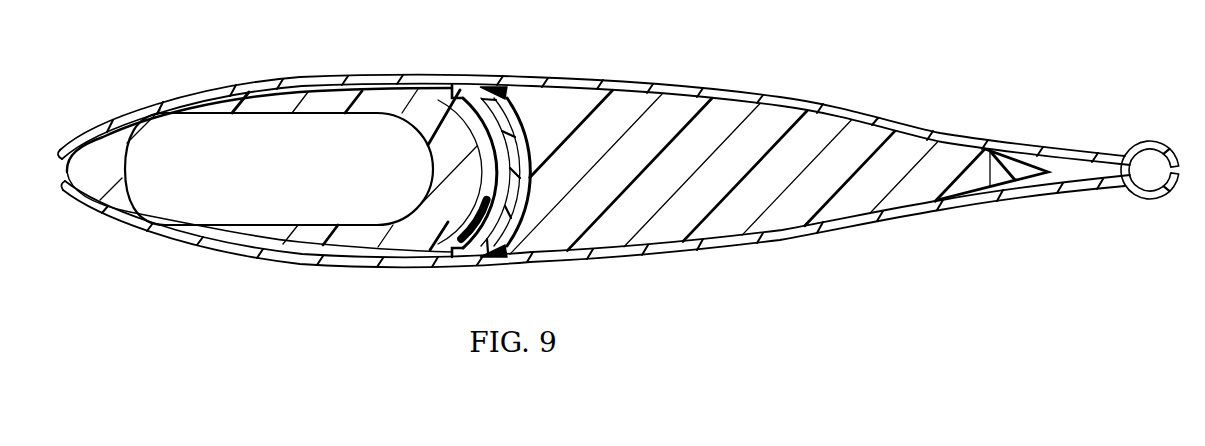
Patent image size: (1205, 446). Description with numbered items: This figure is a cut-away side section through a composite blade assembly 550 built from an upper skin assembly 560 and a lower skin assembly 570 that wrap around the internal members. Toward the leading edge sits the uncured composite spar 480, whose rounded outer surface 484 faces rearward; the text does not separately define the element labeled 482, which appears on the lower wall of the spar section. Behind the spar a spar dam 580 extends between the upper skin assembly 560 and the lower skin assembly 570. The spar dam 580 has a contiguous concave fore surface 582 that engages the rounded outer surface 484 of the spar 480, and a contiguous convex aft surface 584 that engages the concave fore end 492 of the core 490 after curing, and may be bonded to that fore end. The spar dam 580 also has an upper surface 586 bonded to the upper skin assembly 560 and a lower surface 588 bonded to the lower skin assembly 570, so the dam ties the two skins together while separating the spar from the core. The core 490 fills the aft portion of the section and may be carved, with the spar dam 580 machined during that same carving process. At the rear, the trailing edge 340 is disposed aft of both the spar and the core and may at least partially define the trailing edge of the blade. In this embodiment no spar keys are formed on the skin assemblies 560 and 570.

The composite blade assembly 550 is at (658, 60).
The upper skin assembly 560 is at (743, 90).
The lower skin assembly 570 is at (718, 257).
The rounded outer surface 484 is at (272, 94).
The uncured composite spar 480 is at (321, 110).
The lower cavity wall 482 is at (323, 228).
The concave fore surface 582 is at (452, 90).
The lower surface 588 is at (480, 258).
The upper surface 586 is at (481, 86).
The convex aft surface 584 is at (513, 104).
The spar dam 580 is at (517, 242).
The concave fore end 492 is at (514, 178).
The core 490 is at (733, 181).
The trailing edge 340 is at (1009, 163).